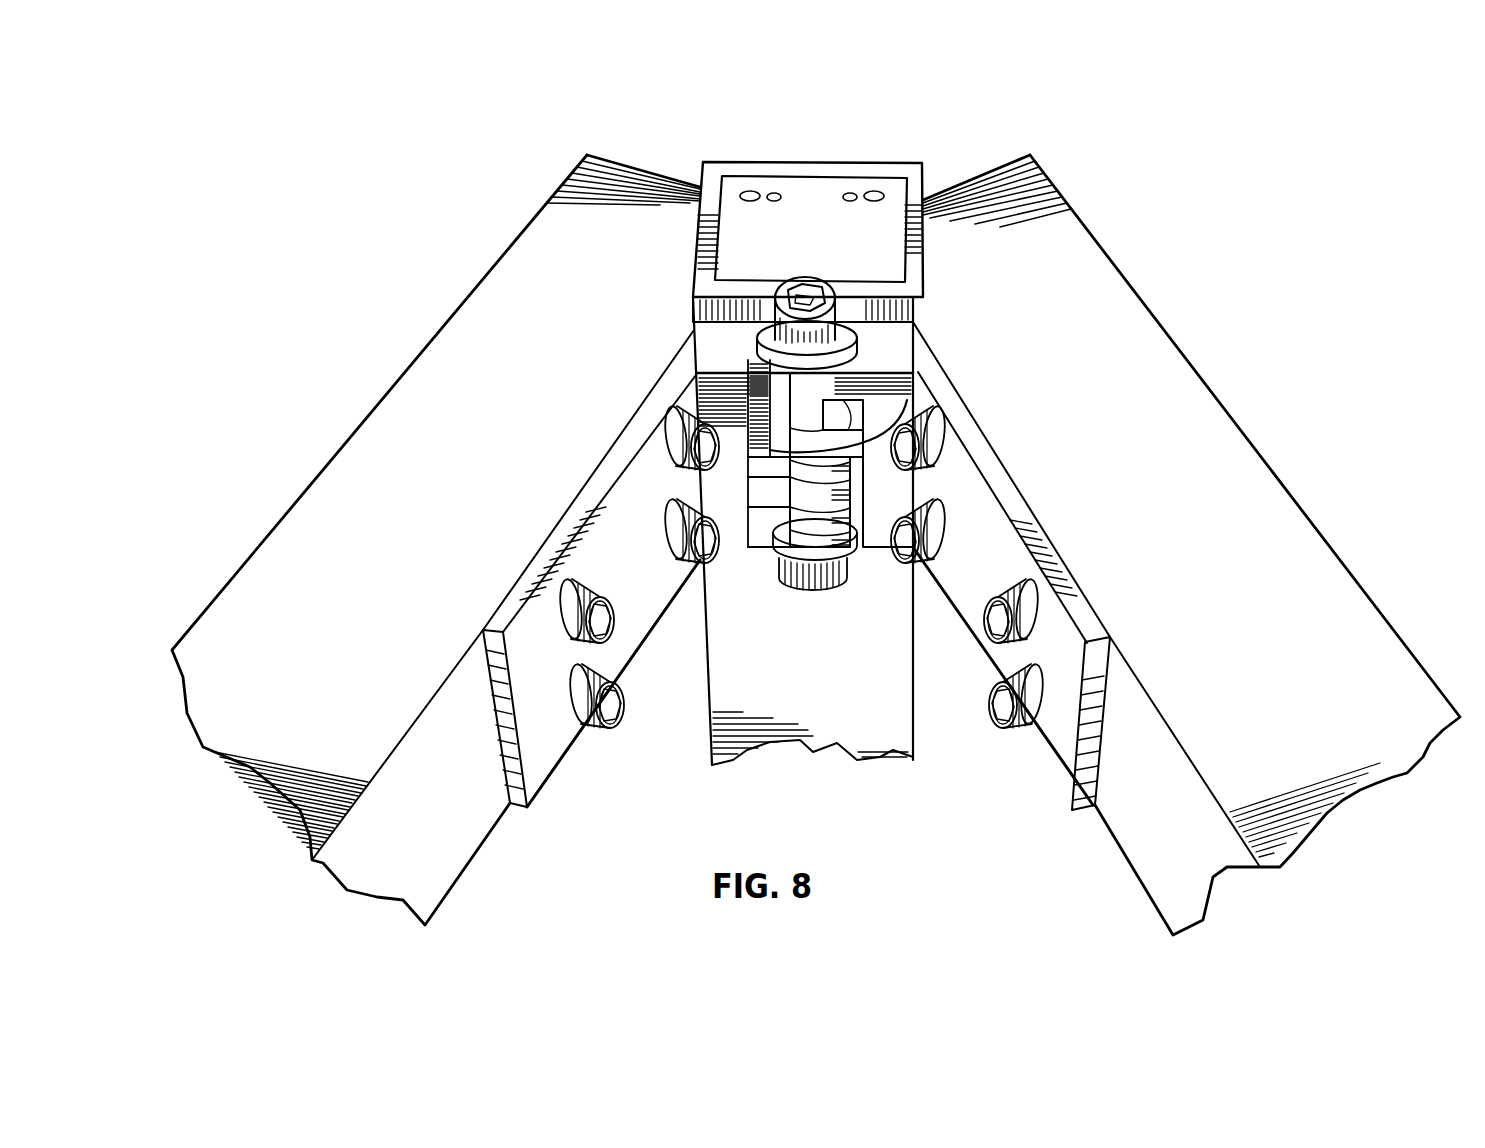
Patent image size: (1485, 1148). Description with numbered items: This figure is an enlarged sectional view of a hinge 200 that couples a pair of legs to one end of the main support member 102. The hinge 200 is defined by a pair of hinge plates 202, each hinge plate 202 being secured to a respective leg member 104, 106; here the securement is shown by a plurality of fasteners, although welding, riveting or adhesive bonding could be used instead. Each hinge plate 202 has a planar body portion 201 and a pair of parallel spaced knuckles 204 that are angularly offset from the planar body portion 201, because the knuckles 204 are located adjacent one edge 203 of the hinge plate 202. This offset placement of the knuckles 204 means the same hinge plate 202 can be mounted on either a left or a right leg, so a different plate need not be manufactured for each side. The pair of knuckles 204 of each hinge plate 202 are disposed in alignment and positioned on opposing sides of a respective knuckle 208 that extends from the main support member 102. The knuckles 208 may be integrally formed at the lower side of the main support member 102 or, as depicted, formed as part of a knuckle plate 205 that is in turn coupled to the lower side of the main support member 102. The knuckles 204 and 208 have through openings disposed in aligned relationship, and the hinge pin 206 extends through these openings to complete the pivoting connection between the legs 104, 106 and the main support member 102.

The main support member 102 is at (800, 163).
The leg member 104 is at (1190, 400).
The leg member 106 is at (355, 472).
The hinge 200 is at (985, 768).
The planar body portion 201 is at (632, 535).
The hinge plate 202 is at (537, 763).
The edge 203 is at (975, 455).
The knuckle 204 is at (837, 387).
The knuckle plate 205 is at (910, 312).
The hinge pin 206 is at (812, 292).
The knuckle 208 is at (800, 412).